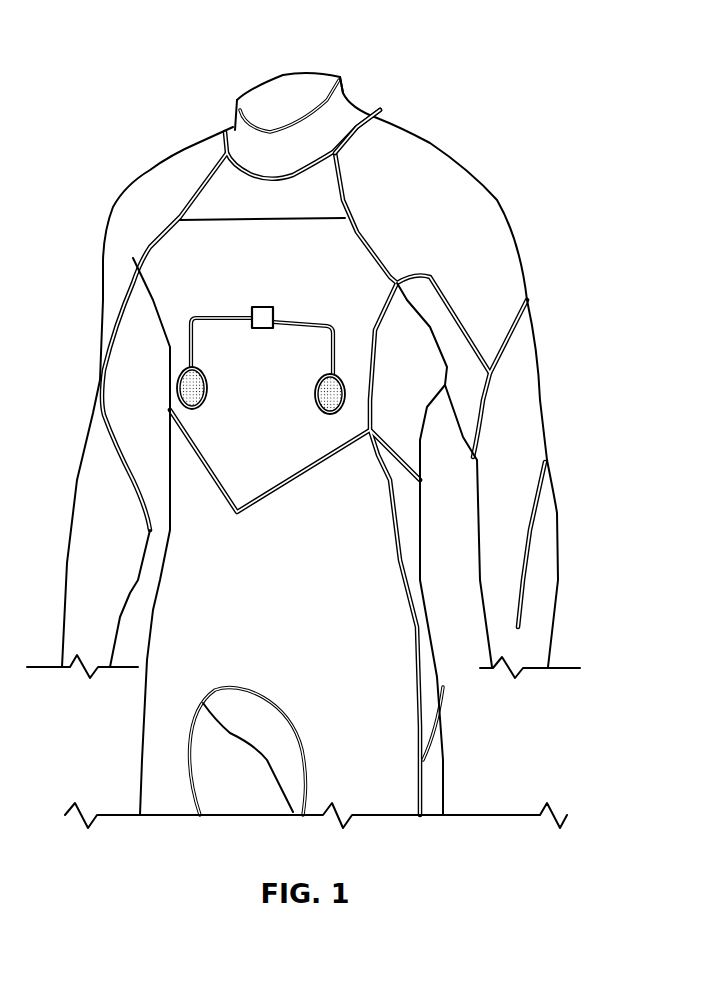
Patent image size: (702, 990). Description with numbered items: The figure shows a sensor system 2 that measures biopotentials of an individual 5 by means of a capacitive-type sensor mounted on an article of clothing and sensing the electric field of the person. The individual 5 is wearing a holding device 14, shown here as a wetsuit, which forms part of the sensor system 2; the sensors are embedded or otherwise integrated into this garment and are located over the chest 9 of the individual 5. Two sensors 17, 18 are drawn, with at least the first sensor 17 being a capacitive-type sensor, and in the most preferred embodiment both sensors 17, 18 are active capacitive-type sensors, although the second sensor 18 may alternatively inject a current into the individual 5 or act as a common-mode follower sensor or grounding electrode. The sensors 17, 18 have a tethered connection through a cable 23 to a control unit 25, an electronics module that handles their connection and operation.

The sensor system 2 is at (308, 429).
The individual 5 is at (303, 450).
The holding device 14 is at (377, 113).
The chest 9 is at (261, 368).
The control unit 25 is at (260, 317).
The cable 23 is at (290, 323).
The first sensor 17 is at (193, 400).
The second sensor 18 is at (325, 405).